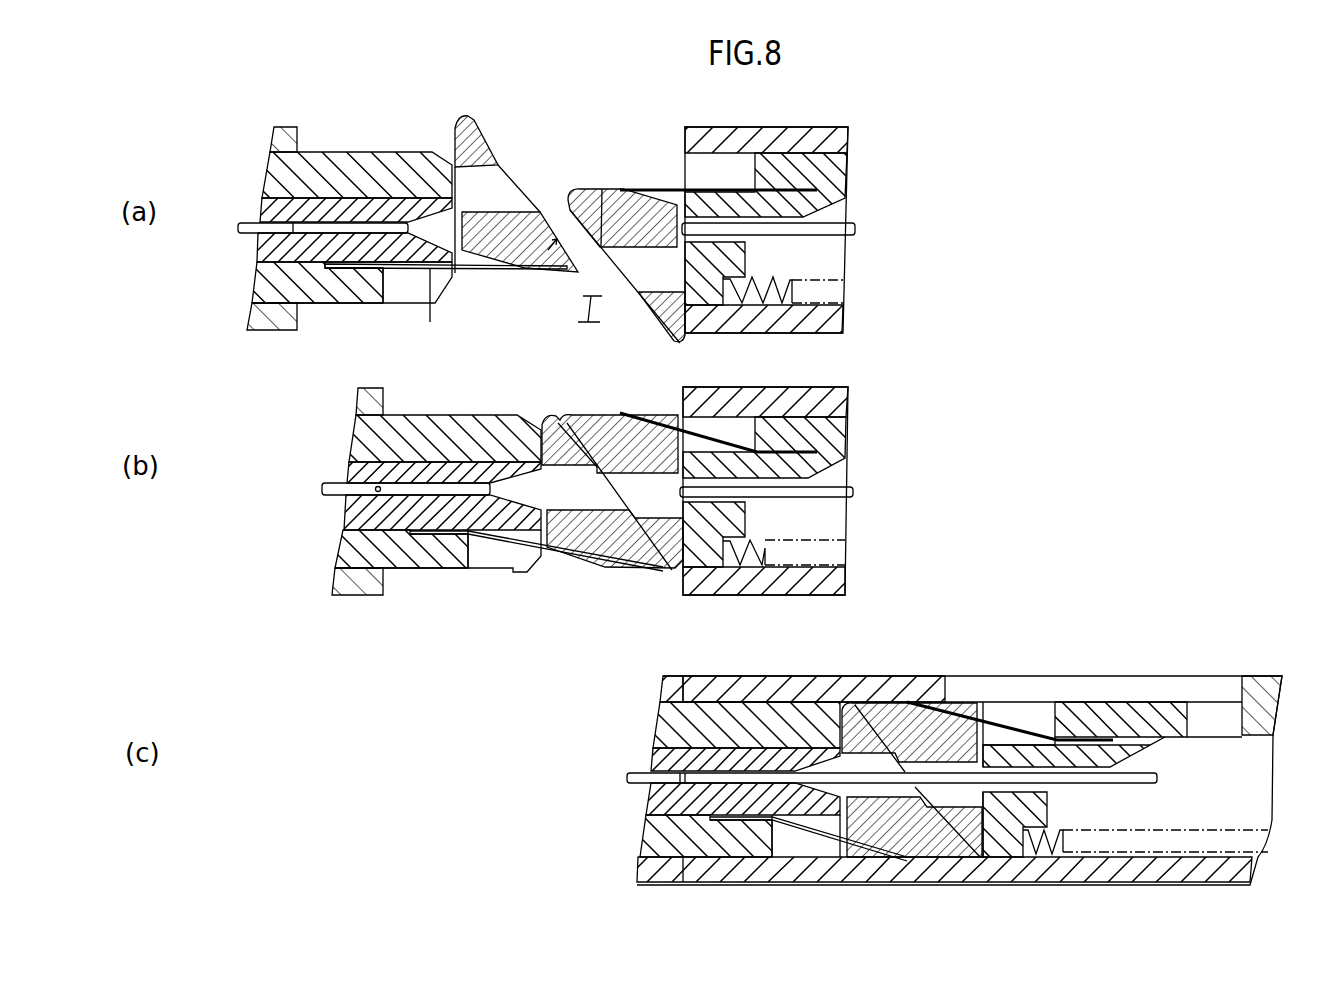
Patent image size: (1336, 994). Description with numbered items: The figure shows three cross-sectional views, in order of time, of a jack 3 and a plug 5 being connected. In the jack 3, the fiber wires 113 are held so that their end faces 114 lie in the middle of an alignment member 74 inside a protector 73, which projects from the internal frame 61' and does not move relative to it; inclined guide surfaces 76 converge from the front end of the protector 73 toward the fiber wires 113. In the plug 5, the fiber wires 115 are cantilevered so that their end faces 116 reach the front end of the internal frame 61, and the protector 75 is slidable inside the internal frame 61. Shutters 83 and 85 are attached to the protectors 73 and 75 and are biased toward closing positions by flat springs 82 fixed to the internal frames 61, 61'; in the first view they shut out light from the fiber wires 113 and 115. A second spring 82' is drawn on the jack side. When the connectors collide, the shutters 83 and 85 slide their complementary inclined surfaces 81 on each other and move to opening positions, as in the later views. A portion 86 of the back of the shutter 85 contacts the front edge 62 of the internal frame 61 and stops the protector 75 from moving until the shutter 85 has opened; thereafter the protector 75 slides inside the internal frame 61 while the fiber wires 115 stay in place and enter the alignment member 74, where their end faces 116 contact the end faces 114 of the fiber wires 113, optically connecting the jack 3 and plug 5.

The jack 3 is at (238, 336).
The plug 5 is at (848, 331).
The internal frame 61 is at (762, 251).
The internal frame 61' is at (433, 395).
The front edge 62 is at (688, 143).
The protector 73 is at (358, 165).
The alignment member 74 is at (372, 206).
The protector 75 is at (790, 165).
The inclined guide surfaces 76 is at (428, 246).
The inclined surfaces 81 is at (500, 158).
The flat springs 82 is at (866, 448).
The rod 82' is at (616, 562).
The shutter 83 is at (484, 142).
The shutter 85 is at (590, 200).
The portion of the back of the shutter 86 is at (690, 325).
The fiber wires 113 is at (246, 223).
The end faces 114 is at (254, 266).
The fiber wires 115 is at (852, 224).
The end faces 116 is at (690, 244).